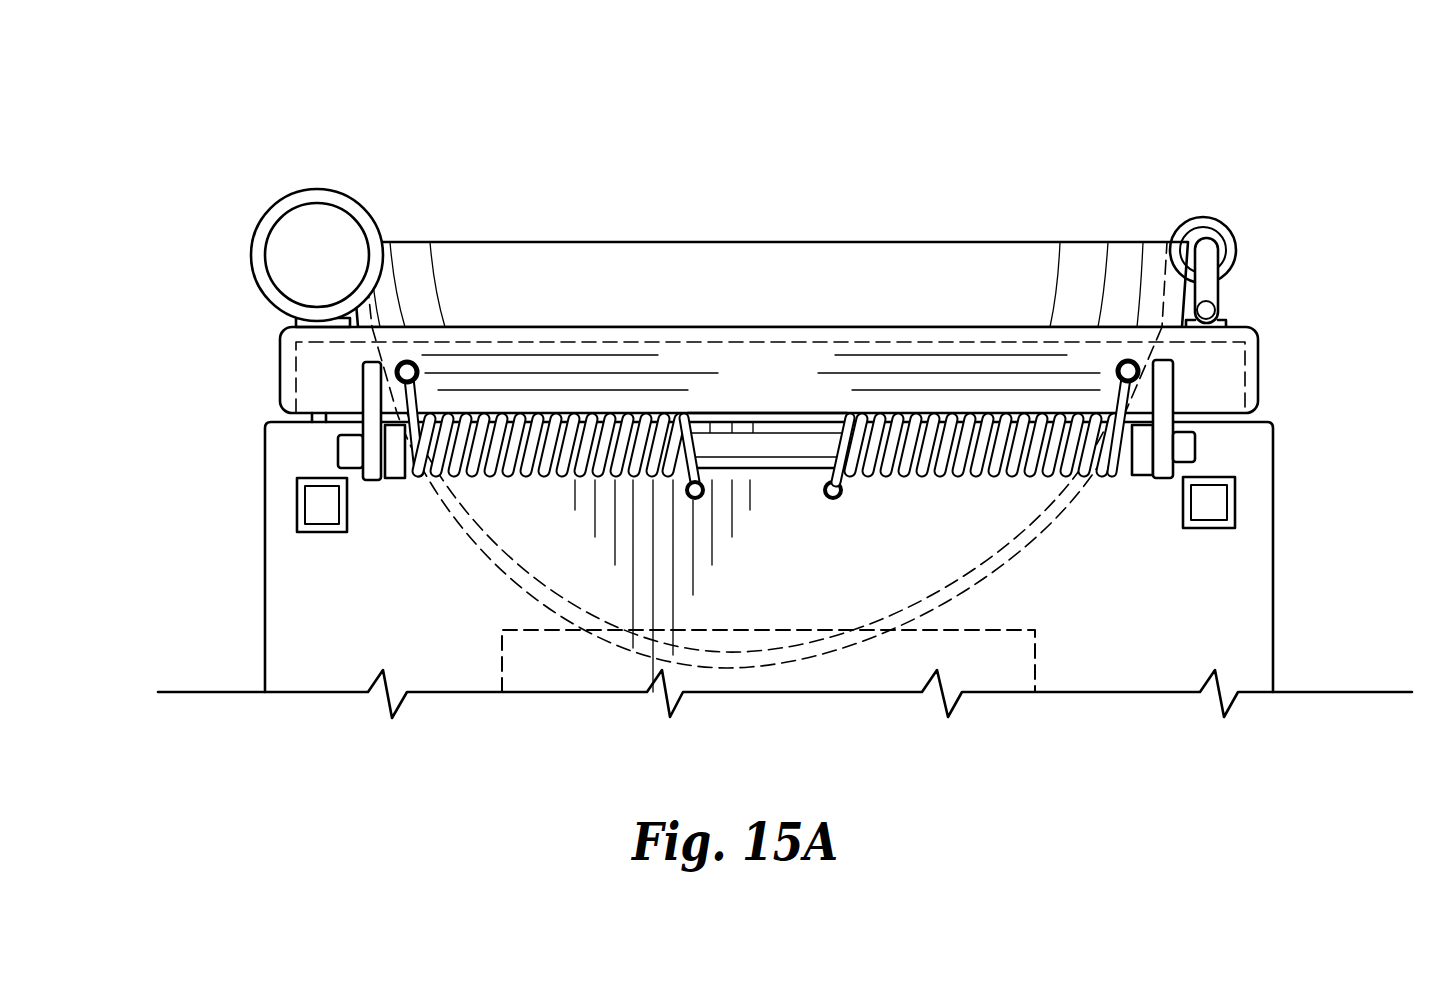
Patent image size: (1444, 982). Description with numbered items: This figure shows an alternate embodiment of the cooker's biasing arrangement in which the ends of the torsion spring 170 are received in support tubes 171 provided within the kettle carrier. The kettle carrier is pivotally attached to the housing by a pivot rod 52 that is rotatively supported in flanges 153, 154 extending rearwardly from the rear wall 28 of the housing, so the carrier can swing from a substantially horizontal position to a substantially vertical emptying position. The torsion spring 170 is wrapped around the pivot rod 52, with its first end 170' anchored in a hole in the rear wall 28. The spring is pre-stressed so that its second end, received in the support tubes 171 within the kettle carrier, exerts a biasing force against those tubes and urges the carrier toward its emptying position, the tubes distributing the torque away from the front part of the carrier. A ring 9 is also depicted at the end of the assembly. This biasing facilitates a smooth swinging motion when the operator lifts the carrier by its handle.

The hook ring 9 is at (342, 196).
The rear wall 28 is at (1200, 605).
The pivot rod 52 is at (1190, 446).
The flange 153 is at (1177, 375).
The flange 154 is at (370, 385).
The torsion spring 170 is at (963, 375).
The first end of torsion spring 170' is at (836, 509).
The support tube 171 is at (413, 360).